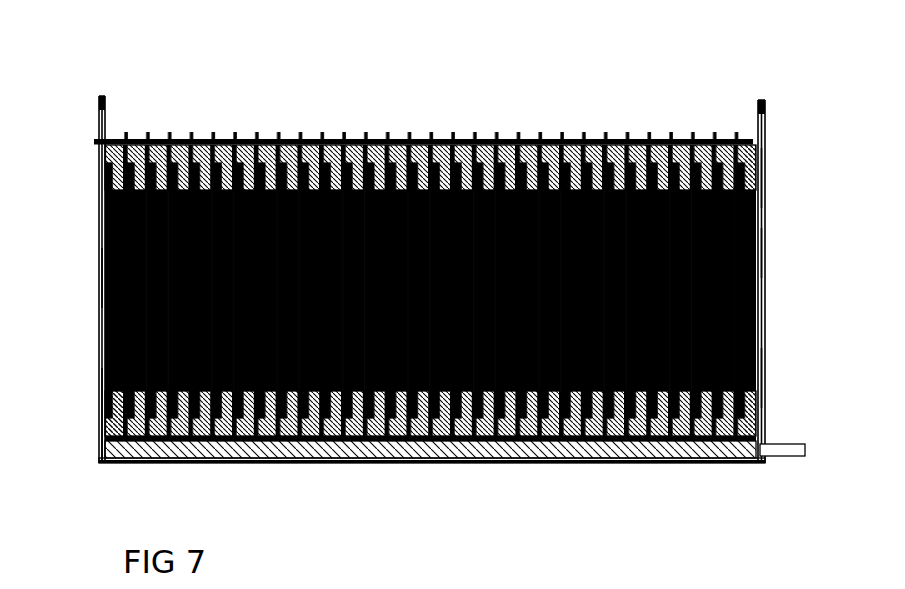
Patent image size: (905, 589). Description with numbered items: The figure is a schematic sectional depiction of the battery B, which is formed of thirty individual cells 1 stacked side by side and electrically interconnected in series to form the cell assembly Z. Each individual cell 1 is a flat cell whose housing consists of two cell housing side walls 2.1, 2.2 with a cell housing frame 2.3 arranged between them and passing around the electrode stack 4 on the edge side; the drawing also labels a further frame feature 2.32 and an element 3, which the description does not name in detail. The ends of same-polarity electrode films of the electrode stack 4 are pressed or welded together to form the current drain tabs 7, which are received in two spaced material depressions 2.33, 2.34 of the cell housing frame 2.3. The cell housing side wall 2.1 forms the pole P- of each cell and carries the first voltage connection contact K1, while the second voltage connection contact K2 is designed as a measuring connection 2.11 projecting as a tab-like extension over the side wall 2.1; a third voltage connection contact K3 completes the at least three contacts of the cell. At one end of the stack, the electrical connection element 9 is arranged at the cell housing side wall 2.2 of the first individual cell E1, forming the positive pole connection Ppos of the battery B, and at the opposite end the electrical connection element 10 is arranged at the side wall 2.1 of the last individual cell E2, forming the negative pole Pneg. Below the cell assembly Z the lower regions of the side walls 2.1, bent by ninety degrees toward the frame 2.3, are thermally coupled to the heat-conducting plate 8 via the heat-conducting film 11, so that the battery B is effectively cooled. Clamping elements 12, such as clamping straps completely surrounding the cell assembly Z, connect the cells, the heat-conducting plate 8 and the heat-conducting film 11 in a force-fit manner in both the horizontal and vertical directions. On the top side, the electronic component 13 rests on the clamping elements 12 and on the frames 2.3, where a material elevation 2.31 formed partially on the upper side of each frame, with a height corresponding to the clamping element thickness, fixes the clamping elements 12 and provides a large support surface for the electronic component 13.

The negative pole Pneg is at (91, 92).
The electrical connection element 10 is at (98, 90).
The cell housing frame 2.3 is at (186, 130).
The individual cell 1 is at (230, 140).
The electronic component 13 is at (263, 130).
The material elevation 2.31 is at (317, 130).
The separator 3 is at (365, 130).
The electrode layer 2.32 is at (434, 130).
The material depression 2.33 is at (506, 130).
The measuring connection 2.11 is at (591, 130).
The second voltage connection contact K2 is at (663, 130).
The positive pole connection Ppos is at (750, 102).
The electrical connection element 9 is at (757, 96).
The battery B is at (846, 64).
The last individual cell E2 is at (93, 167).
The electrode stack 4 is at (93, 215).
The negative pole P- is at (93, 282).
The cell housing side wall 2.1 is at (93, 342).
The first voltage connection contact K1 is at (93, 382).
The first individual cell E1 is at (755, 178).
The cell housing side wall 2.2 is at (755, 312).
The third voltage connection contact K3 is at (755, 360).
The heat-conducting film 11 is at (758, 433).
The clamping element 12 is at (93, 455).
The heat-conducting plate 8 is at (387, 440).
The current drain tab 7 is at (437, 405).
The material depression 2.34 is at (525, 430).
The cell assembly Z is at (619, 412).